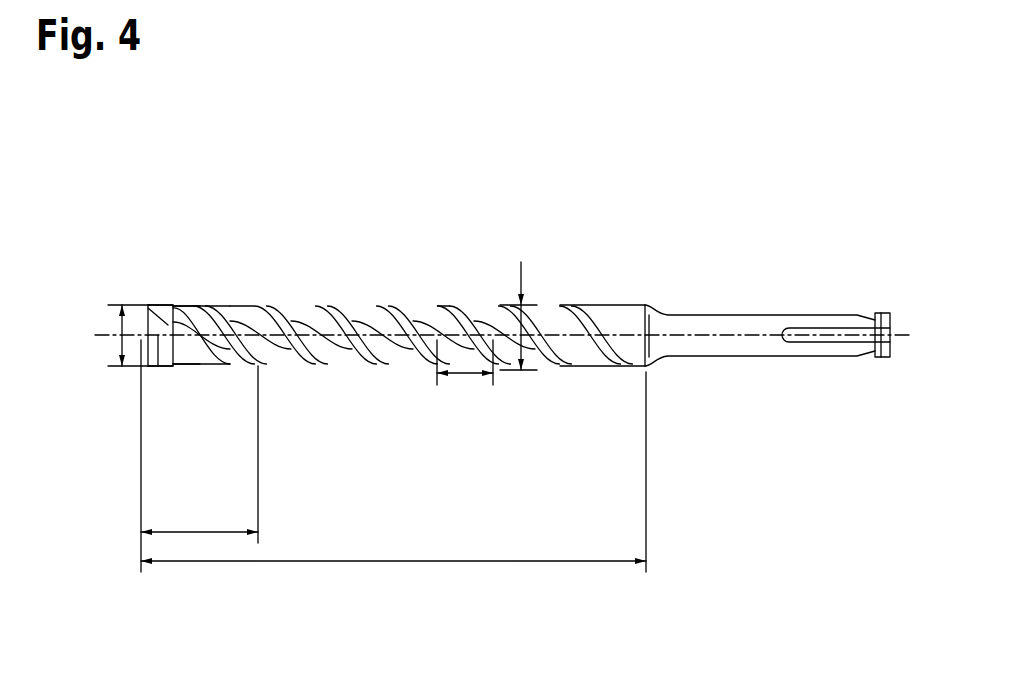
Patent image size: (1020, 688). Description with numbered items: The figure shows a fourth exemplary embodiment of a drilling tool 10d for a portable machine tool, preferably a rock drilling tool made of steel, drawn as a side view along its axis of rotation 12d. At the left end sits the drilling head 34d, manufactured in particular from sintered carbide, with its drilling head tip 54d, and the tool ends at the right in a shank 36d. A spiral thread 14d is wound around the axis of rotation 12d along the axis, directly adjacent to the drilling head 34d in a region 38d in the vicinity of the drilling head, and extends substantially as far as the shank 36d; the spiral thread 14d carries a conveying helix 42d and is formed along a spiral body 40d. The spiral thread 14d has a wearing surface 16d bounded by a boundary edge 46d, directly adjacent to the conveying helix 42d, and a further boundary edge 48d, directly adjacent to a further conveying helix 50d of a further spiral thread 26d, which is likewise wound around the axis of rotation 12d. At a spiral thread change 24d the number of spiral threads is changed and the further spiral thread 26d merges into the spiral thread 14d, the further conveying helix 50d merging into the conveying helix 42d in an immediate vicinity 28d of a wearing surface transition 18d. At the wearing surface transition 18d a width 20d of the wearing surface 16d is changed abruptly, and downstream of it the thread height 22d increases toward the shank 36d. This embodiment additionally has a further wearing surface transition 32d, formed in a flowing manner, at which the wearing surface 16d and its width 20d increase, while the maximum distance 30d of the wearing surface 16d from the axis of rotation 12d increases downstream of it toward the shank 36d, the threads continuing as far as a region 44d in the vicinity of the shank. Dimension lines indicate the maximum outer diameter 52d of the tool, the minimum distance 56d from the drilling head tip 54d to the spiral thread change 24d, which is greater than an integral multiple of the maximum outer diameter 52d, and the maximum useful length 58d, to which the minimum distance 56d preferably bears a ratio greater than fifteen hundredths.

The drilling tool 10d is at (752, 185).
The axis of rotation 12d is at (843, 338).
The spiral thread 14d is at (325, 290).
The wearing surface 16d is at (237, 310).
The wearing surface transition 18d is at (268, 352).
The width 20d is at (222, 360).
The thread height 22d is at (461, 376).
The spiral thread change 24d is at (283, 350).
The further spiral thread 26d is at (233, 287).
The immediate vicinity of the wearing surface transition 28d is at (397, 243).
The maximum distance 30d is at (509, 300).
The further wearing surface transition 32d is at (423, 302).
The drilling head 34d is at (149, 305).
The shank 36d is at (672, 330).
The region in the vicinity of the drilling head 38d is at (166, 228).
The spiral body 40d is at (481, 228).
The conveying helix 42d is at (334, 360).
The region in the vicinity of the shank 44d is at (590, 280).
The boundary edge 46d is at (252, 312).
The further boundary edge 48d is at (228, 313).
The further conveying helix 50d is at (256, 356).
The maximum outer diameter 52d is at (147, 335).
The drilling head tip 54d is at (120, 334).
The minimum distance 56d is at (208, 532).
The maximum useful length 58d is at (440, 561).